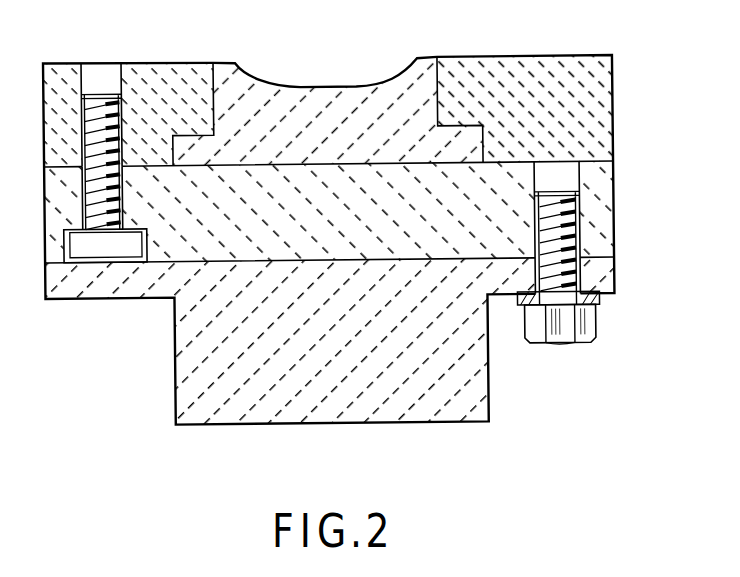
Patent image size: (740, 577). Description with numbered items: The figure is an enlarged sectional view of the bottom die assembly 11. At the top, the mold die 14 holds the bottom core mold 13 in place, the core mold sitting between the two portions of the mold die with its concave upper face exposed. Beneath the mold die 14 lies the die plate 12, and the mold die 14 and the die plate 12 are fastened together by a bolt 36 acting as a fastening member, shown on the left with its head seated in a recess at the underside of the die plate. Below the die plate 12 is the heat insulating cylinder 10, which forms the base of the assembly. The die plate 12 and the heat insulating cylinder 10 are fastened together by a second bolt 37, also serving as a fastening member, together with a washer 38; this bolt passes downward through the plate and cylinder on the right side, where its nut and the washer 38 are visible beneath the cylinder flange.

The heat insulating cylinder 10 is at (480, 388).
The bottom die assembly 11 is at (622, 158).
The die plate 12 is at (601, 201).
The bottom core mold 13 is at (393, 74).
The mold die 14 is at (606, 79).
The bolt 36 is at (97, 262).
The bolt 37 is at (591, 329).
The washer 38 is at (598, 293).